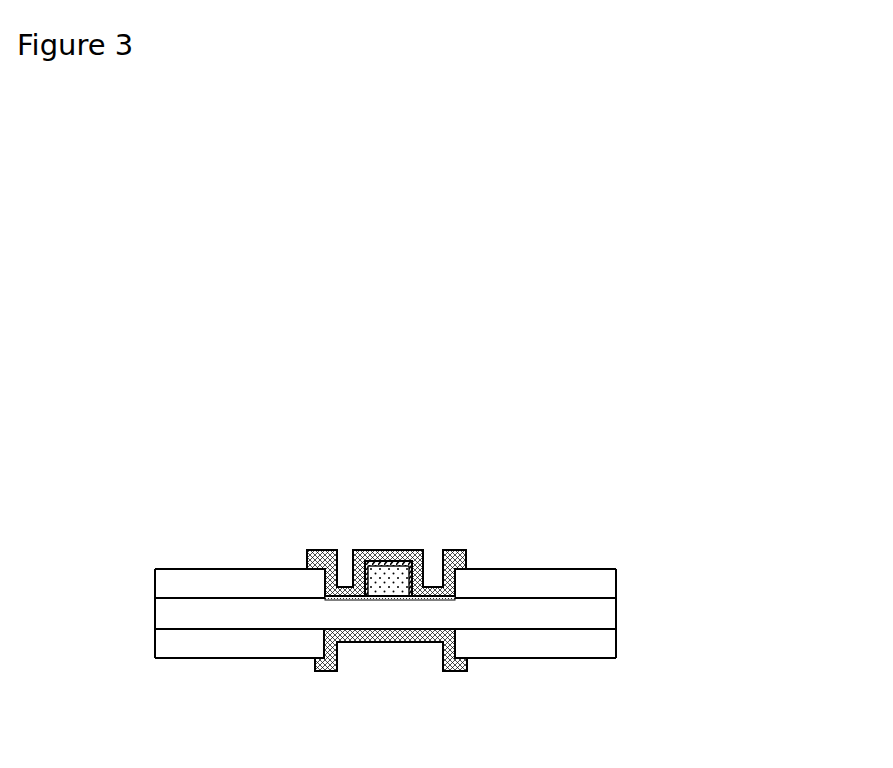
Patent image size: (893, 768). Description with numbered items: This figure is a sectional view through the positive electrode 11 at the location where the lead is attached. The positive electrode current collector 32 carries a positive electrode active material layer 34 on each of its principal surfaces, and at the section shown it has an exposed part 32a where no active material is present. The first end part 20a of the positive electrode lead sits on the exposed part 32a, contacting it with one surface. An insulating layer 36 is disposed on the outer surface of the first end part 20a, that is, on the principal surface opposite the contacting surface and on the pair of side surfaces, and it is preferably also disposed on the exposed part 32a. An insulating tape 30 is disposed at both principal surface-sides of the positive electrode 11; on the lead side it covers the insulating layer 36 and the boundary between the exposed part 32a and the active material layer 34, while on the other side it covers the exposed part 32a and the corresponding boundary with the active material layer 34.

The positive electrode 11 is at (479, 596).
The positive electrode active material layer 34 is at (616, 580).
The positive electrode current collector 32 is at (616, 612).
The exposed part 32a is at (324, 640).
The insulating tape 30 is at (364, 550).
The insulating layer 36 is at (384, 551).
The first end part 20a is at (400, 574).